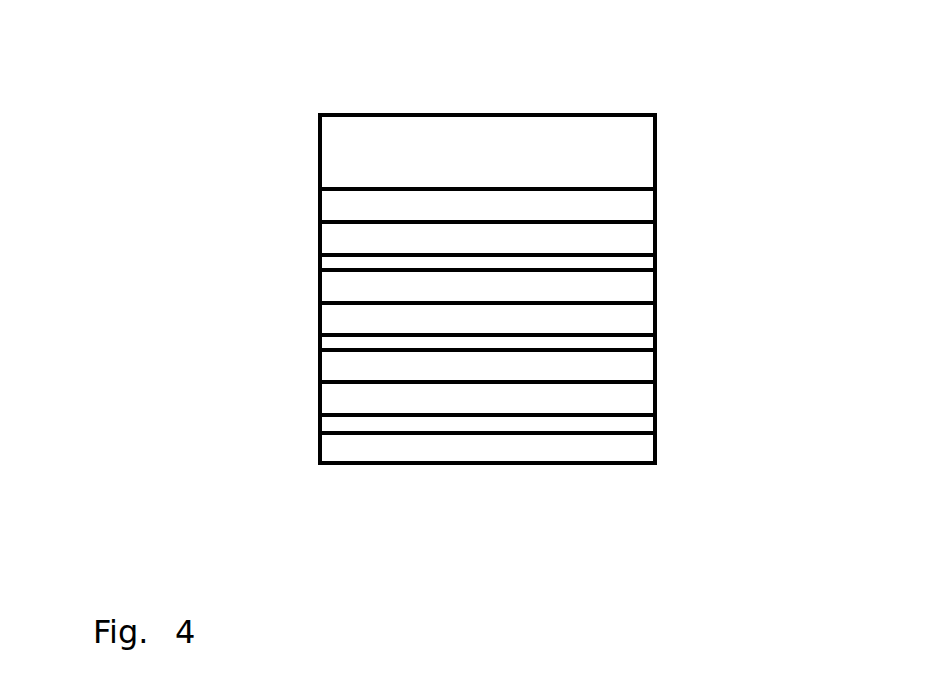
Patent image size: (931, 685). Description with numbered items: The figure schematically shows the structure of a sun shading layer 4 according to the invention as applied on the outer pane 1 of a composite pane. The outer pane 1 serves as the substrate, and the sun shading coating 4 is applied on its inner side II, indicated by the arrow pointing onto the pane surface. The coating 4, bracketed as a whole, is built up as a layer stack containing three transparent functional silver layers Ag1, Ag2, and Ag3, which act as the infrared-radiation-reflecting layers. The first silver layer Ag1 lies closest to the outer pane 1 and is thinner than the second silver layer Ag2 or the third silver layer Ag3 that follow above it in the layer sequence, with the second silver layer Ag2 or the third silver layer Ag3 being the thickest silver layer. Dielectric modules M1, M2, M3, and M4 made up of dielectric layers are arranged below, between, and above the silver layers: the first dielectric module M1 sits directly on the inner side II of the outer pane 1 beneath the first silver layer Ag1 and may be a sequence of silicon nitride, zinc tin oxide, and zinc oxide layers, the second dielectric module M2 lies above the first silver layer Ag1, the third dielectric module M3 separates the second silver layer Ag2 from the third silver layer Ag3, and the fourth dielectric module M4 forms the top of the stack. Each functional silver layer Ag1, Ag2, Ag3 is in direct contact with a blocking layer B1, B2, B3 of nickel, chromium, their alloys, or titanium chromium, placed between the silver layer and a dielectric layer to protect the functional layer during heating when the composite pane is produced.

The outer pane 1 is at (648, 143).
The sun shading layer 4 is at (655, 189).
The inner side of the outer pane II is at (488, 172).
The first dielectric module M1 is at (335, 207).
The first silver layer Ag1 is at (333, 237).
The first blocking layer B1 is at (333, 263).
The second dielectric module M2 is at (336, 289).
The second silver layer Ag2 is at (338, 318).
The second blocking layer B2 is at (335, 346).
The third dielectric module M3 is at (346, 369).
The third silver layer Ag3 is at (333, 403).
The third blocking layer B3 is at (330, 425).
The fourth dielectric module M4 is at (343, 447).